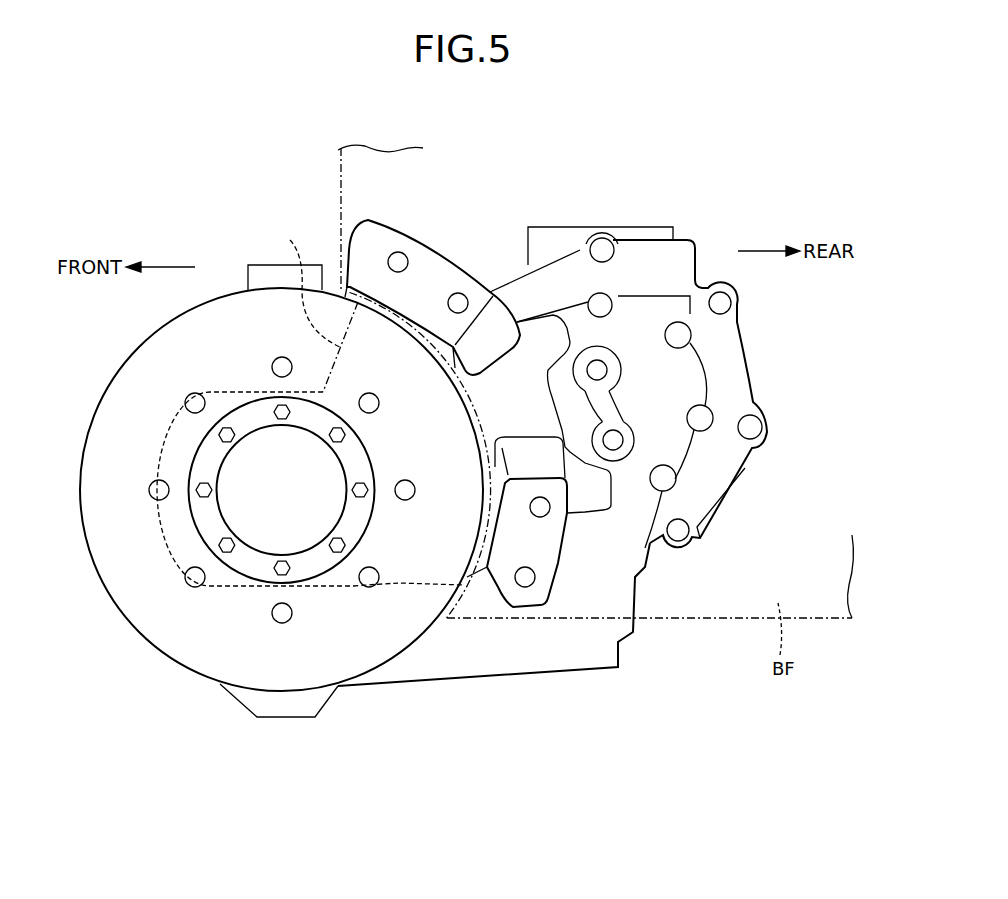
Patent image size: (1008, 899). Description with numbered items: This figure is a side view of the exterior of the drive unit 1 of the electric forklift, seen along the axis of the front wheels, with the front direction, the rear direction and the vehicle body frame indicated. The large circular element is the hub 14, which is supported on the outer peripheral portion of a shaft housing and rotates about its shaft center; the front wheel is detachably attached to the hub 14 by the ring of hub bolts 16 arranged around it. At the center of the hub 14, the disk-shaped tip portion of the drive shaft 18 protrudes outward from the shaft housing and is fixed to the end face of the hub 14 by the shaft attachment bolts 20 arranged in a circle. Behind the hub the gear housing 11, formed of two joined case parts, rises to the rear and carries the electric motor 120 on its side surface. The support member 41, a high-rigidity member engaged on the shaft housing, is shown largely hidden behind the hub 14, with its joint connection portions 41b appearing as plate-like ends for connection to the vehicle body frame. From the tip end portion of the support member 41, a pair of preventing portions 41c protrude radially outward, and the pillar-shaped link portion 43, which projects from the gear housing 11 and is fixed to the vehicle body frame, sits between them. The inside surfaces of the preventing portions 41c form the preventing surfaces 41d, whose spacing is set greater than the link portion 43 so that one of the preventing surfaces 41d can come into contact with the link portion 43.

The drive unit 1 is at (592, 160).
The gear housing 11 is at (590, 653).
The hub 14 is at (210, 315).
The hub bolt 16 is at (195, 585).
The drive shaft 18 is at (242, 510).
The shaft attachment bolt 20 is at (193, 483).
The support member 41 is at (310, 282).
The joint connection portion 41b is at (429, 264).
The preventing portion 41c is at (550, 330).
The preventing surface 41d is at (575, 360).
The link portion 43 is at (607, 402).
The electric motor 120 is at (540, 237).